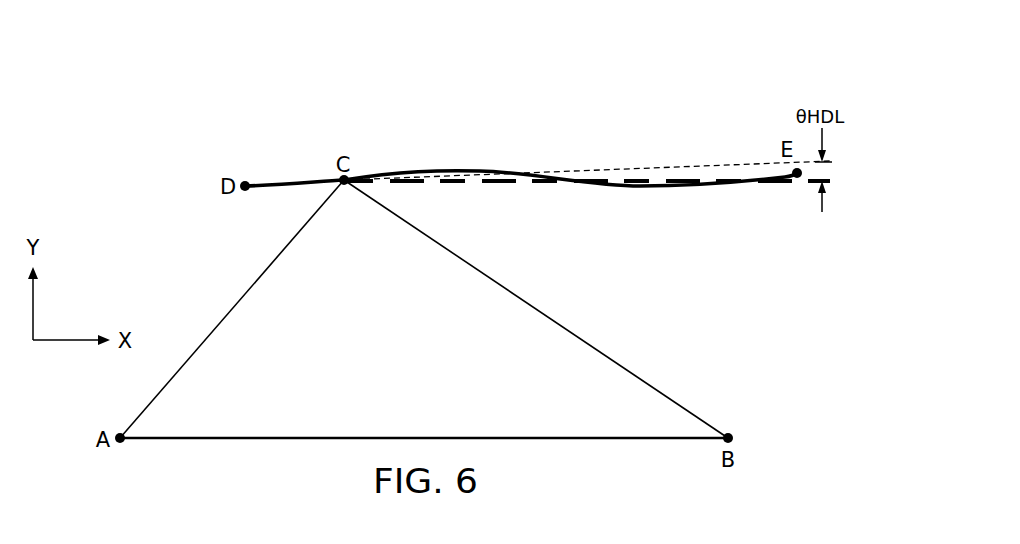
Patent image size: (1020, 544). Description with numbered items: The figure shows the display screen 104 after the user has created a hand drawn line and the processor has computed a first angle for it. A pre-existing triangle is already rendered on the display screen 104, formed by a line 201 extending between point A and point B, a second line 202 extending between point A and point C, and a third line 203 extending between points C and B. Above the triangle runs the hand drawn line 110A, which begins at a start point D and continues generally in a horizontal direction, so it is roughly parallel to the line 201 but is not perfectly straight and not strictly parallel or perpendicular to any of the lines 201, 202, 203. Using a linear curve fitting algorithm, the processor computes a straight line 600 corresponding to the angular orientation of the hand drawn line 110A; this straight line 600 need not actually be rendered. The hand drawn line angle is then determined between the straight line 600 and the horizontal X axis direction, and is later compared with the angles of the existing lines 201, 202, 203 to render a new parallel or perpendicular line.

The display screen 104 is at (292, 80).
The straight line 600 is at (620, 170).
The hand drawn line 110A is at (632, 188).
The line 201 is at (563, 442).
The second line 202 is at (233, 308).
The third line 203 is at (534, 307).